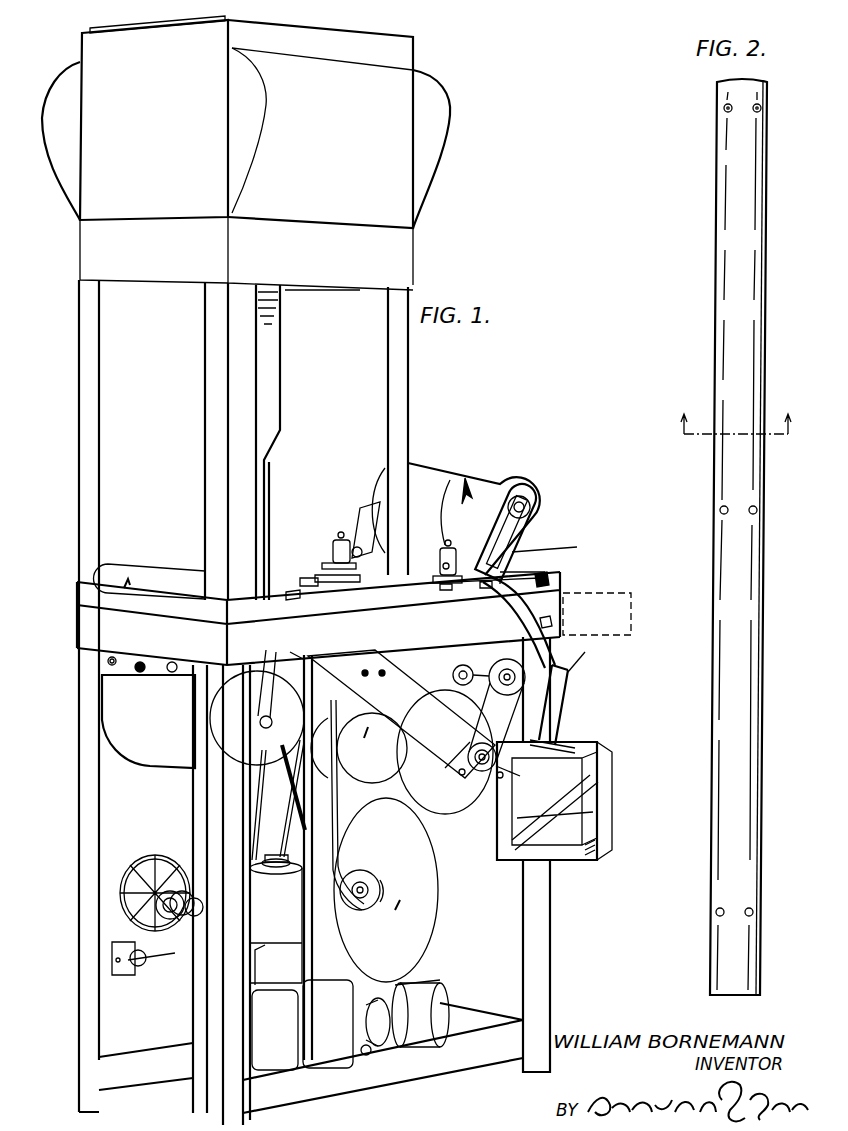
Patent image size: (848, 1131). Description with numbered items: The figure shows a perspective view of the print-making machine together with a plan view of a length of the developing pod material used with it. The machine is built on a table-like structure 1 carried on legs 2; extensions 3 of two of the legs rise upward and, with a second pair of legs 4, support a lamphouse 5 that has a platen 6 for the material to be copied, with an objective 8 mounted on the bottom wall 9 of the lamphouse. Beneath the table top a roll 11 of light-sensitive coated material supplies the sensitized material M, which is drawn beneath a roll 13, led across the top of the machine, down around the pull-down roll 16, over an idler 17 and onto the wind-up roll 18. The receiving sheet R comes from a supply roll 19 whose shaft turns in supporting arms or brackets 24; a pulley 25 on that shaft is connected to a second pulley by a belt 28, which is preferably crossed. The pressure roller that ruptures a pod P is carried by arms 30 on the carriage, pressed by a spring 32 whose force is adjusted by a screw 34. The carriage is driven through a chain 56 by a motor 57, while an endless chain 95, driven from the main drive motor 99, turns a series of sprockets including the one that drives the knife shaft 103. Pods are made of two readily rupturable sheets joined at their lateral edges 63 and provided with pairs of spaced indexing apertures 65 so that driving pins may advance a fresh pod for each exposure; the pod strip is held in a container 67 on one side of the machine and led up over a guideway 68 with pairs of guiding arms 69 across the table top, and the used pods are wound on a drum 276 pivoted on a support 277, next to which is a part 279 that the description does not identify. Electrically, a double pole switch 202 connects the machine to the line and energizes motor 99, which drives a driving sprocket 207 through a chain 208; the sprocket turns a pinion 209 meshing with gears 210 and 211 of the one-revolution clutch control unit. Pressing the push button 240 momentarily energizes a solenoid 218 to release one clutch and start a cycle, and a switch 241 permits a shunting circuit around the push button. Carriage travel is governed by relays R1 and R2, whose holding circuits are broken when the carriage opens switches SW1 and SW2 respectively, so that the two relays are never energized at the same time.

In FIG. 1, the table-like structure 1 is at (77, 613).
In FIG. 1, the legs 2 is at (570, 918).
In FIG. 1, the extensions 3 is at (205, 386).
In FIG. 1, the second pair of legs 4 is at (424, 369).
In FIG. 2, the second pair of legs 4 is at (734, 443).
In FIG. 1, the lamphouse 5 is at (450, 105).
In FIG. 1, the platen 6 is at (90, 28).
In FIG. 1, the objective 8 is at (270, 325).
In FIG. 1, the bottom wall 9 is at (323, 290).
In FIG. 1, the roll of light-sensitive coated material 11 is at (257, 707).
In FIG. 1, the roll 13 is at (148, 574).
In FIG. 1, the pull-down roll 16 is at (503, 714).
In FIG. 1, the idler 17 is at (453, 674).
In FIG. 1, the wind-up roll 18 is at (359, 748).
In FIG. 1, the supply roll 19 is at (507, 470).
In FIG. 1, the supporting arms or brackets 24 is at (367, 540).
In FIG. 1, the pulley 25 is at (528, 500).
In FIG. 1, the belt 28 is at (520, 540).
In FIG. 1, the arms 30 is at (440, 566).
In FIG. 1, the spring 32 is at (333, 562).
In FIG. 1, the screw 34 is at (446, 547).
In FIG. 1, the chain 56 is at (336, 832).
In FIG. 1, the motor 57 is at (417, 993).
In FIG. 2, the lateral edges 63 is at (760, 717).
In FIG. 1, the indexing apertures 65 is at (572, 668).
In FIG. 2, the indexing apertures 65 is at (749, 908).
In FIG. 1, the container 67 is at (603, 760).
In FIG. 1, the guideway 68 is at (522, 600).
In FIG. 1, the guiding arms 69 is at (552, 622).
In FIG. 1, the chain 95 is at (288, 832).
In FIG. 1, the drive motor 99 is at (276, 923).
In FIG. 1, the knife shaft 103 is at (549, 578).
In FIG. 1, the double pole switch 202 is at (106, 660).
In FIG. 1, the driving sprocket 207 is at (150, 870).
In FIG. 1, the chain 208 is at (182, 892).
In FIG. 1, the pinion 209 is at (170, 892).
In FIG. 1, the gear 210 is at (194, 898).
In FIG. 1, the gear 211 is at (138, 938).
In FIG. 1, the solenoid 218 is at (133, 975).
In FIG. 1, the push button 240 is at (176, 662).
In FIG. 1, the switch 241 is at (142, 662).
In FIG. 1, the drum 276 is at (420, 875).
In FIG. 1, the support 277 is at (410, 977).
In FIG. 1, the disc 279 is at (432, 806).
In FIG. 1, the sensitized material M is at (148, 721).
In FIG. 1, the pod P is at (562, 710).
In FIG. 2, the pod P is at (726, 561).
In FIG. 1, the receiving sheet material R is at (452, 483).
In FIG. 1, the relay R1 is at (328, 1024).
In FIG. 1, the relay R2 is at (275, 1030).
In FIG. 1, the normally-closed switch SW1 is at (300, 598).
In FIG. 1, the switch SW2 is at (485, 593).